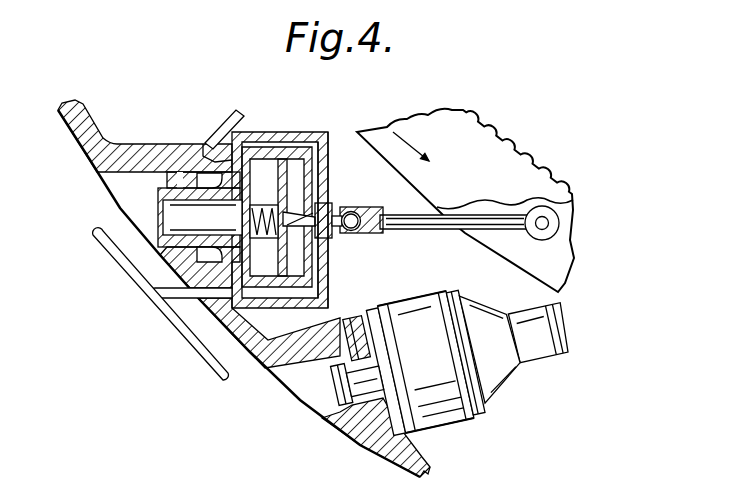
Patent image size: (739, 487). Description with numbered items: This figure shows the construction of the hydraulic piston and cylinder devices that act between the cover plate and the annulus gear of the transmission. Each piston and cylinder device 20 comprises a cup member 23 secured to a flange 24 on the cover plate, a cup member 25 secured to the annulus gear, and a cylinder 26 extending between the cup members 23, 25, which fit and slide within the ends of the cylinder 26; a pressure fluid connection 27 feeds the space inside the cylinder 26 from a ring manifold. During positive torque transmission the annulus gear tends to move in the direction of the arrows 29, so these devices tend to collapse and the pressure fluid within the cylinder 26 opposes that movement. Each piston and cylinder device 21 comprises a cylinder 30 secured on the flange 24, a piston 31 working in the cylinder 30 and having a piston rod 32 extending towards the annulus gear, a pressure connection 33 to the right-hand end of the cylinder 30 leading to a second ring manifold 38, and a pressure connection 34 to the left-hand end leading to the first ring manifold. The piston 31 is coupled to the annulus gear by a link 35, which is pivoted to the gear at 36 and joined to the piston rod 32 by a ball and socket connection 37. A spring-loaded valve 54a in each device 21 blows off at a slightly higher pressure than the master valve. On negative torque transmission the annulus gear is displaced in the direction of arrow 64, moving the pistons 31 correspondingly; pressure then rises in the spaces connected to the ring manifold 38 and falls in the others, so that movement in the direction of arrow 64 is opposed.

The piston and cylinder device 20 is at (494, 405).
The piston and cylinder device 21 is at (285, 128).
The cup member 23 is at (353, 413).
The flange 24 is at (80, 122).
The cup member 25 is at (514, 380).
The cylinder 26 is at (462, 418).
The pressure fluid connection 27 is at (352, 309).
The arrows 29 is at (488, 170).
The cylinder 30 is at (310, 135).
The piston 31 is at (270, 160).
The piston rod 32 is at (330, 205).
The pressure connection 33 is at (175, 293).
The pressure connection 34 is at (220, 127).
The link 35 is at (413, 228).
The pivot 36 is at (560, 220).
The ball and socket connection 37 is at (327, 240).
The second ring manifold 38 is at (198, 347).
The spring-loaded valve 54a is at (379, 279).
The arrow 64 is at (410, 143).